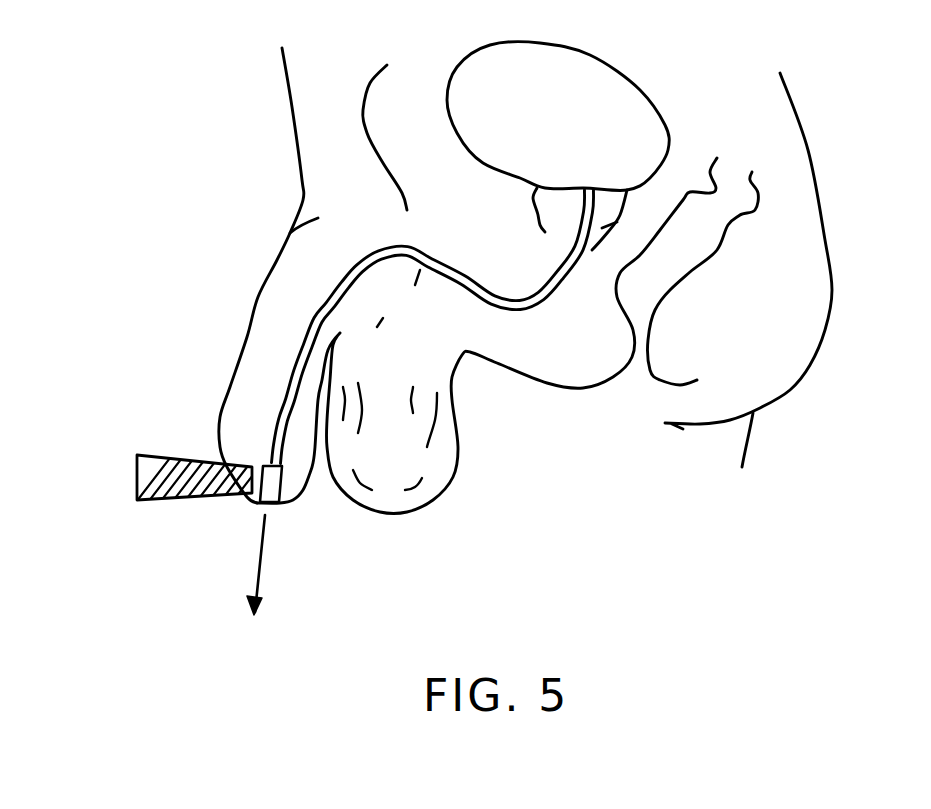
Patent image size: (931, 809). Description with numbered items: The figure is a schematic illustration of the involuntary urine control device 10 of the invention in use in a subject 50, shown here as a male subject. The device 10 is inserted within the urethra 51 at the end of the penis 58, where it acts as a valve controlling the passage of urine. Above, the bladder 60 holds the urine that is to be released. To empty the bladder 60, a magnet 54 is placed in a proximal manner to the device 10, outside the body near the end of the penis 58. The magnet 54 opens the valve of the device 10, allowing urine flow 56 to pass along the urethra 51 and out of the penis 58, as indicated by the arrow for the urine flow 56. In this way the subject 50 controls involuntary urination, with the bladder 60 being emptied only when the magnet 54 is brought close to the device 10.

The subject 50 is at (476, 257).
The urethra 51 is at (296, 372).
The magnet 54 is at (147, 481).
The urine flow 56 is at (265, 577).
The penis 58 is at (255, 311).
The bladder 60 is at (582, 150).
The involuntary urine control device 10 is at (267, 505).